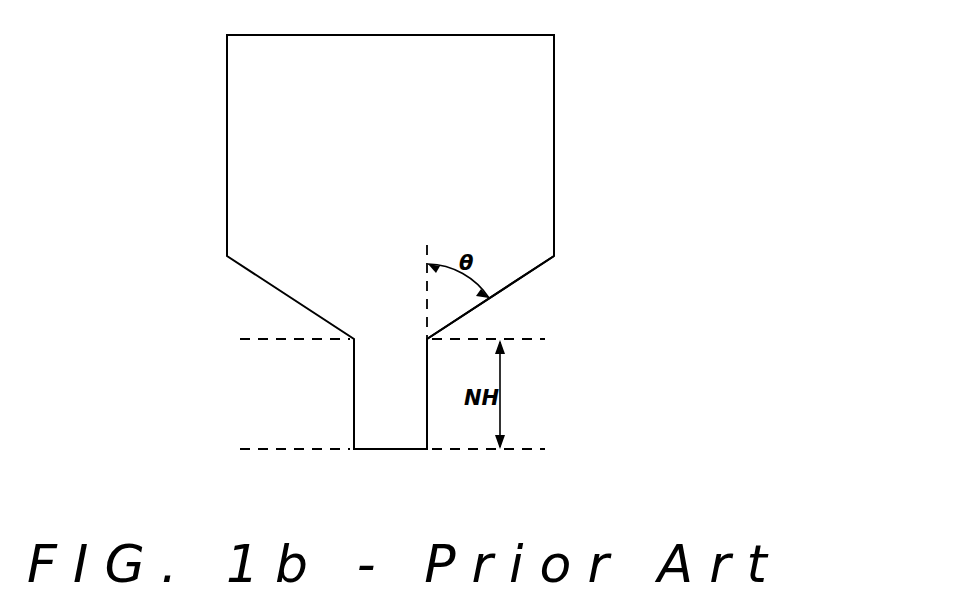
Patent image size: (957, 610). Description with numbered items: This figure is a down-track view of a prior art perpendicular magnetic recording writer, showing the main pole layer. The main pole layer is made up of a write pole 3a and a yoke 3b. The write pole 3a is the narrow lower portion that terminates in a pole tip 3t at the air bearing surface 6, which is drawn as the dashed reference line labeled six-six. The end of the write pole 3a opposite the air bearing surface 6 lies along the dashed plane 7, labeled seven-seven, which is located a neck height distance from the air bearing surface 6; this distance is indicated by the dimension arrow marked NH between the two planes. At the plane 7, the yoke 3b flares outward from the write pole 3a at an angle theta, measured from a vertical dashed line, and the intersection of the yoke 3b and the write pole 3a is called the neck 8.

The yoke 3b is at (541, 103).
The write pole 3a is at (368, 401).
The pole tip 3t is at (388, 452).
The neck 8 is at (430, 340).
The plane 7- 7 is at (389, 340).
The air bearing surface 6 is at (391, 450).